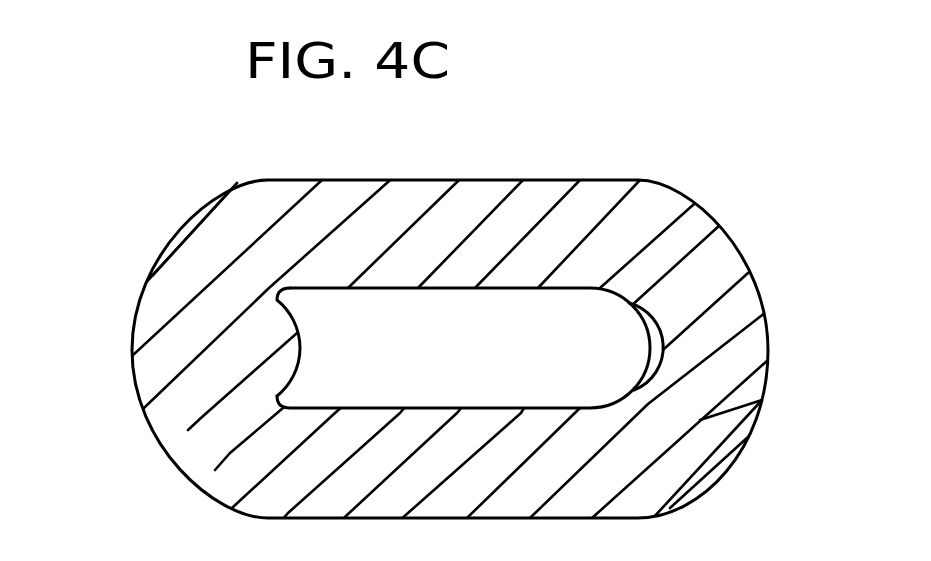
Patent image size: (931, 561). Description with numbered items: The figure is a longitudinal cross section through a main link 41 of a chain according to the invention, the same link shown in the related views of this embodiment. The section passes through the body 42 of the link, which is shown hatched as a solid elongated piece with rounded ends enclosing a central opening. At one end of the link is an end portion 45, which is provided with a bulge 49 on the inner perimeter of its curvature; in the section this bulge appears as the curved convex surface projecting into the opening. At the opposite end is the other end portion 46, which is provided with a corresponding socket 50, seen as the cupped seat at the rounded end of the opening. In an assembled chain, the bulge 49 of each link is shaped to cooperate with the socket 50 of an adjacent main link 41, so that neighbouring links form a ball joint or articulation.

The main link 41 is at (693, 223).
The body 42 is at (725, 265).
The end portion 45 is at (157, 303).
The other end portion 46 is at (742, 340).
The bulge 49 is at (290, 349).
The socket 50 is at (640, 330).